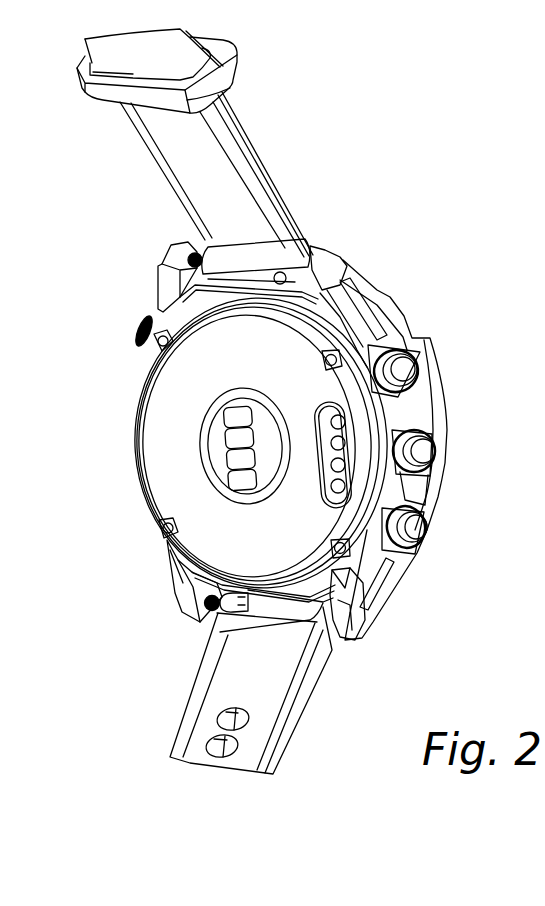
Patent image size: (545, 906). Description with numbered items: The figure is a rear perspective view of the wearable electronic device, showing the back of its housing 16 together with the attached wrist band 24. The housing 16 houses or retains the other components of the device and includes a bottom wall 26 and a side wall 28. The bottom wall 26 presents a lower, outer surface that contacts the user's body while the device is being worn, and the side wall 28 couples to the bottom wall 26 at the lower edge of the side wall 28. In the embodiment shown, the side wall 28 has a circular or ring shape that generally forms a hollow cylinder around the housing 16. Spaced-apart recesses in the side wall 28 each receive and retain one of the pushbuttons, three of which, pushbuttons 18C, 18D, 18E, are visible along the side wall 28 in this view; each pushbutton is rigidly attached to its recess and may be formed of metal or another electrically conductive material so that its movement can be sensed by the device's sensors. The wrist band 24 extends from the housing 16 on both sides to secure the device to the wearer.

The housing 16 is at (150, 539).
The pushbutton 18C is at (412, 530).
The pushbutton 18D is at (422, 453).
The pushbutton 18E is at (405, 370).
The wrist band 24 is at (168, 157).
The bottom wall 26 is at (153, 402).
The side wall 28 is at (420, 490).